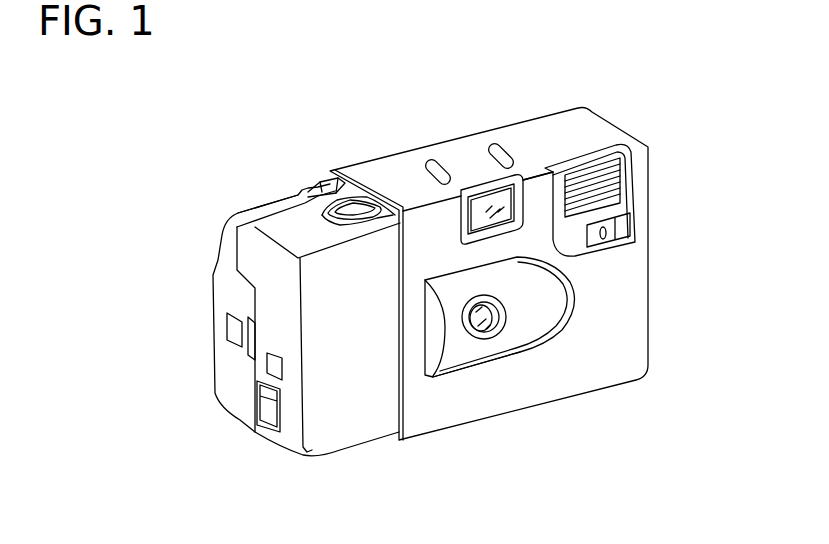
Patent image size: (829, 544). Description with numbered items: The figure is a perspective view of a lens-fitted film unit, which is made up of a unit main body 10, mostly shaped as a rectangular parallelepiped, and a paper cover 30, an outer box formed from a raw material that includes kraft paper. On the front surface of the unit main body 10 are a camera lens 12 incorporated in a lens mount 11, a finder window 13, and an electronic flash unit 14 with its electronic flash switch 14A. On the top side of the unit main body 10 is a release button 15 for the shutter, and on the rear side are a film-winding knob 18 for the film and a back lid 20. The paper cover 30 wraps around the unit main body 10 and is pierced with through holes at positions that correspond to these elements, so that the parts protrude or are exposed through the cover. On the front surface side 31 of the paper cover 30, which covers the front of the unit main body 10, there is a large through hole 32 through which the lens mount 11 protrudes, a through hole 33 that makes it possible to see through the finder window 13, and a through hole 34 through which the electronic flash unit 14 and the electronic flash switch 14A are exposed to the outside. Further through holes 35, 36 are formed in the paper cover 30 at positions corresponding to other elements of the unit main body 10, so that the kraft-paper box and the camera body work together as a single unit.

The unit main body 10 is at (265, 437).
The lens mount 11 is at (530, 335).
The camera lens 12 is at (476, 336).
The finder window 13 is at (504, 193).
The electronic flash unit 14 is at (590, 172).
The electronic flash switch 14A is at (622, 224).
The release button 15 is at (317, 190).
The film-winding knob 18 is at (260, 203).
The back lid 20 is at (227, 323).
The paper cover 30 is at (455, 137).
The front surface side 31 is at (615, 358).
The large through hole 32 is at (575, 308).
The through hole 33 is at (525, 178).
The through hole 34 is at (632, 148).
The through hole 35 is at (432, 162).
The through hole 36 is at (494, 147).